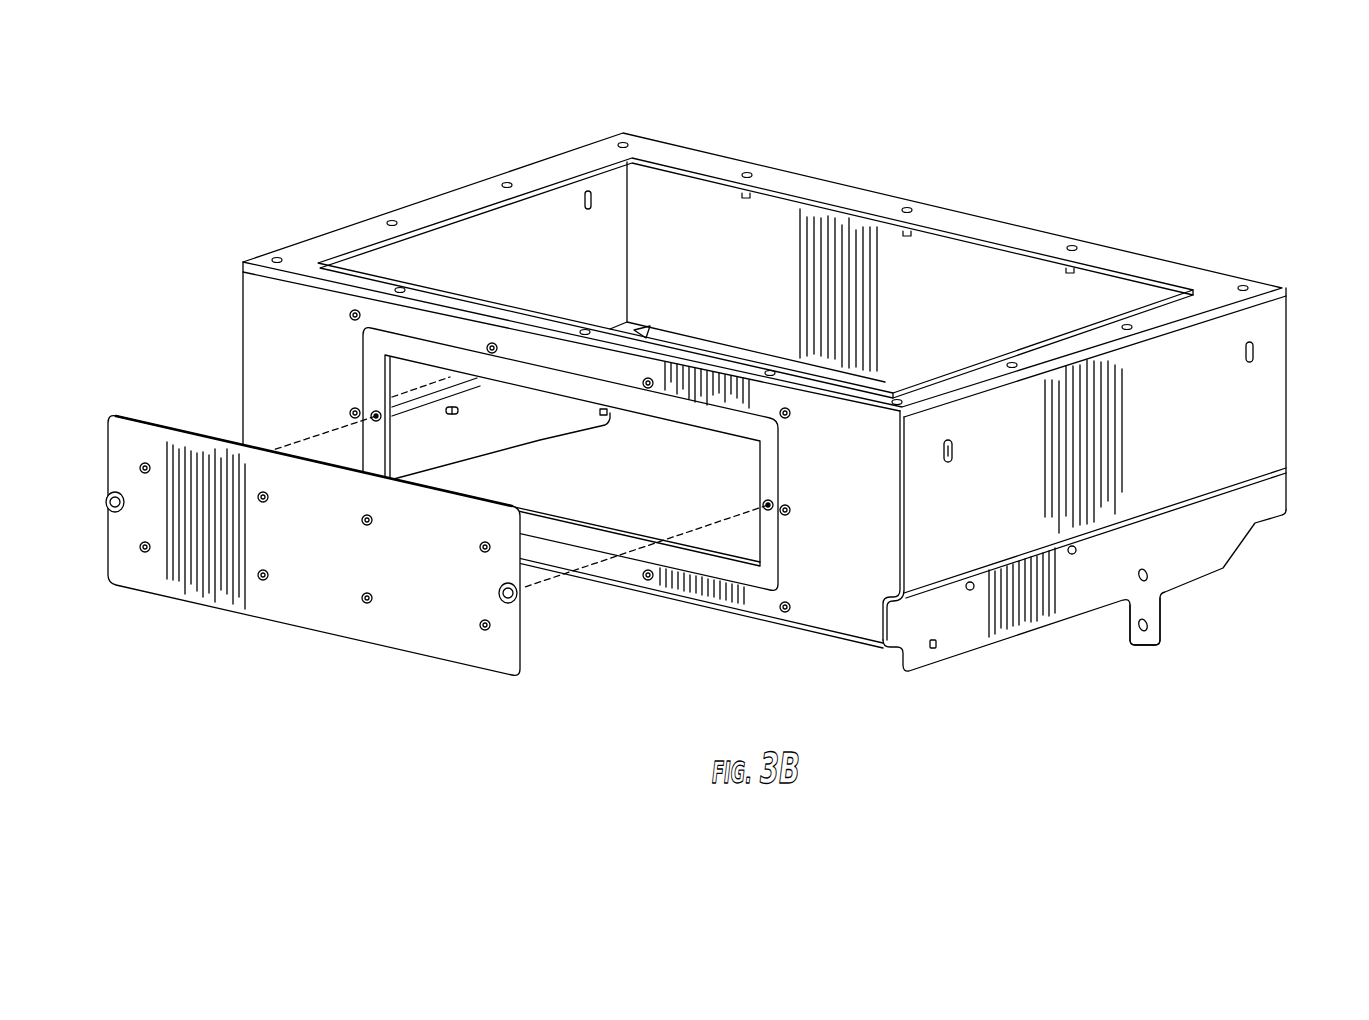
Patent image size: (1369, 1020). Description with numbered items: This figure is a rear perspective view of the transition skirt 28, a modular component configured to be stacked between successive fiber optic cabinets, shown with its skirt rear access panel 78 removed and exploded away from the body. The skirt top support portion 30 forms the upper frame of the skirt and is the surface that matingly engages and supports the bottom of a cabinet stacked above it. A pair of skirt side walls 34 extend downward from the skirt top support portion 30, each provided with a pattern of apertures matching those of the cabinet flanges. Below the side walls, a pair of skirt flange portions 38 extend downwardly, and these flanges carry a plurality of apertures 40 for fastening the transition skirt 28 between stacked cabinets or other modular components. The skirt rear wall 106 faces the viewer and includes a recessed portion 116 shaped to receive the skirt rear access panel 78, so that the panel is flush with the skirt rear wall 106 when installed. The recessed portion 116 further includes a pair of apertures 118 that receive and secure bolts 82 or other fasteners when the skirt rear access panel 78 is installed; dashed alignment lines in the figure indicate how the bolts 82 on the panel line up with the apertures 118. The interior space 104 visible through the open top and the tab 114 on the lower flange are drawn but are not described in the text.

The transition skirt 28 is at (279, 133).
The skirt top support portion 30 is at (665, 150).
The skirt side walls 34 is at (462, 250).
The interior rear wall 104 is at (778, 217).
The recessed portion 116 is at (378, 370).
The apertures 118 is at (350, 413).
The bolts 82 is at (110, 508).
The skirt rear access panel 78 is at (207, 592).
The skirt rear wall 106 is at (848, 610).
The apertures 40 is at (934, 652).
The skirt flange portions 38 is at (1072, 596).
The mounting tab 114 is at (1160, 608).